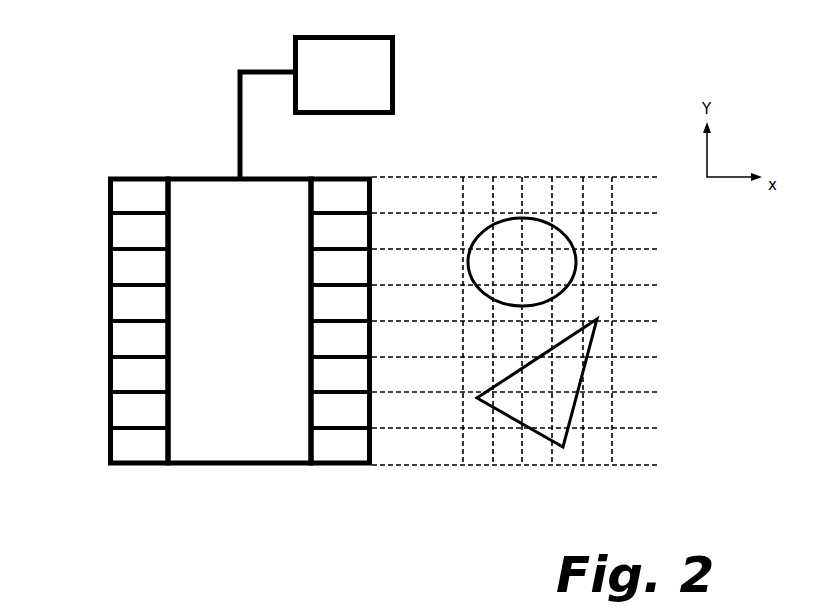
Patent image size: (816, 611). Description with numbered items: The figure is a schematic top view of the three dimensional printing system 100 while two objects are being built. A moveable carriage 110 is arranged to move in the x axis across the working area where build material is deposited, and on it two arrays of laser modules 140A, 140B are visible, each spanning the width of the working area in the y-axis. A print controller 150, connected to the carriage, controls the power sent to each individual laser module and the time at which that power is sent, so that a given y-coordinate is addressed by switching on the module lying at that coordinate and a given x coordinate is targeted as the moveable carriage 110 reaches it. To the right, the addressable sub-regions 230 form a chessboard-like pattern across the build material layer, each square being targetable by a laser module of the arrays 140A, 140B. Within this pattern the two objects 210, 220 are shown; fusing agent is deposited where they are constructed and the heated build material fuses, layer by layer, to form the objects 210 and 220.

The three dimensional printing system 100 is at (158, 128).
The moveable carriage 110 is at (260, 328).
The array of laser modules 140A is at (108, 268).
The array of laser modules 140B is at (310, 270).
The print controller 150 is at (395, 72).
The object 210 is at (542, 274).
The object 220 is at (559, 400).
The addressable sub-regions 230 is at (595, 178).